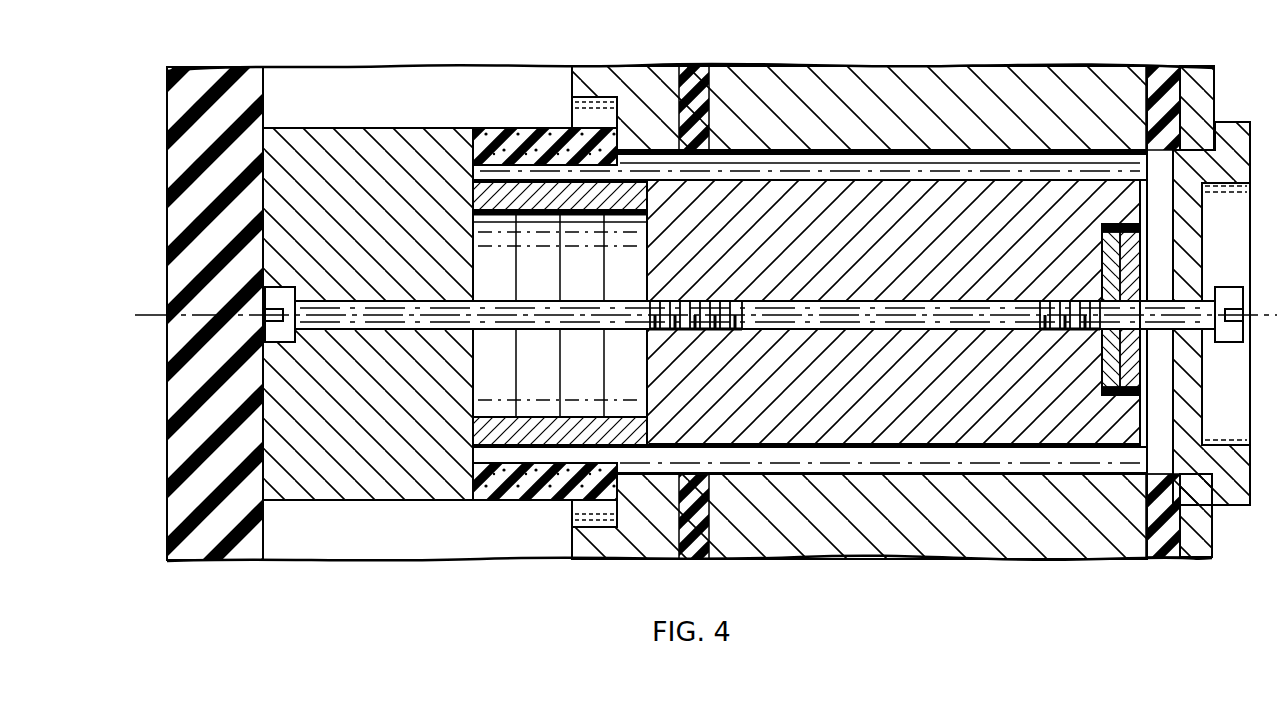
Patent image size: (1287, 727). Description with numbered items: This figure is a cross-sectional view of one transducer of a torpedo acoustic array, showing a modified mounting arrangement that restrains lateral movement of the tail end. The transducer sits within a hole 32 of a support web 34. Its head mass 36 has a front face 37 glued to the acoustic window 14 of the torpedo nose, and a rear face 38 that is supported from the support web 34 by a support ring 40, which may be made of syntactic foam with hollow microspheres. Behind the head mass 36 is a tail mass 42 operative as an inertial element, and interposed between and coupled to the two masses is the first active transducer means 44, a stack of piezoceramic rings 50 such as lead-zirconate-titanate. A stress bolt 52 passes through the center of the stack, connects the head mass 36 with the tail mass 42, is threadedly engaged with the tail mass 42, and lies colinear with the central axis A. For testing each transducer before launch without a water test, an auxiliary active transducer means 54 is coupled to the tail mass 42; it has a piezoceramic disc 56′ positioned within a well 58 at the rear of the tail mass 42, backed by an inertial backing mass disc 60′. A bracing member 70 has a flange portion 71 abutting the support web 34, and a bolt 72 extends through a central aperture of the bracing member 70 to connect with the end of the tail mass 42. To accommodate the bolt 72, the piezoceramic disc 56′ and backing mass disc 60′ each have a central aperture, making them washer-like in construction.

The acoustic window 14 is at (218, 82).
The hole 32 is at (1060, 170).
The support web 34 is at (903, 66).
The head mass 36 is at (360, 138).
The front face 37 is at (262, 145).
The rear face 38 is at (478, 463).
The support ring 40 is at (510, 130).
The tail mass 42 is at (845, 182).
The first active transducer means 44 is at (588, 281).
The piezoceramic rings 50 is at (625, 415).
The stress bolt 52 is at (493, 301).
The auxiliary active transducer means 54 is at (1140, 375).
The piezoceramic disc 56′ is at (1102, 262).
The well 58 is at (1120, 224).
The backing mass disc 60′ is at (1158, 243).
The bracing member 70 is at (1250, 152).
The flange portion 71 is at (1233, 122).
The bolt 72 is at (1160, 331).
The central axis A is at (1263, 315).